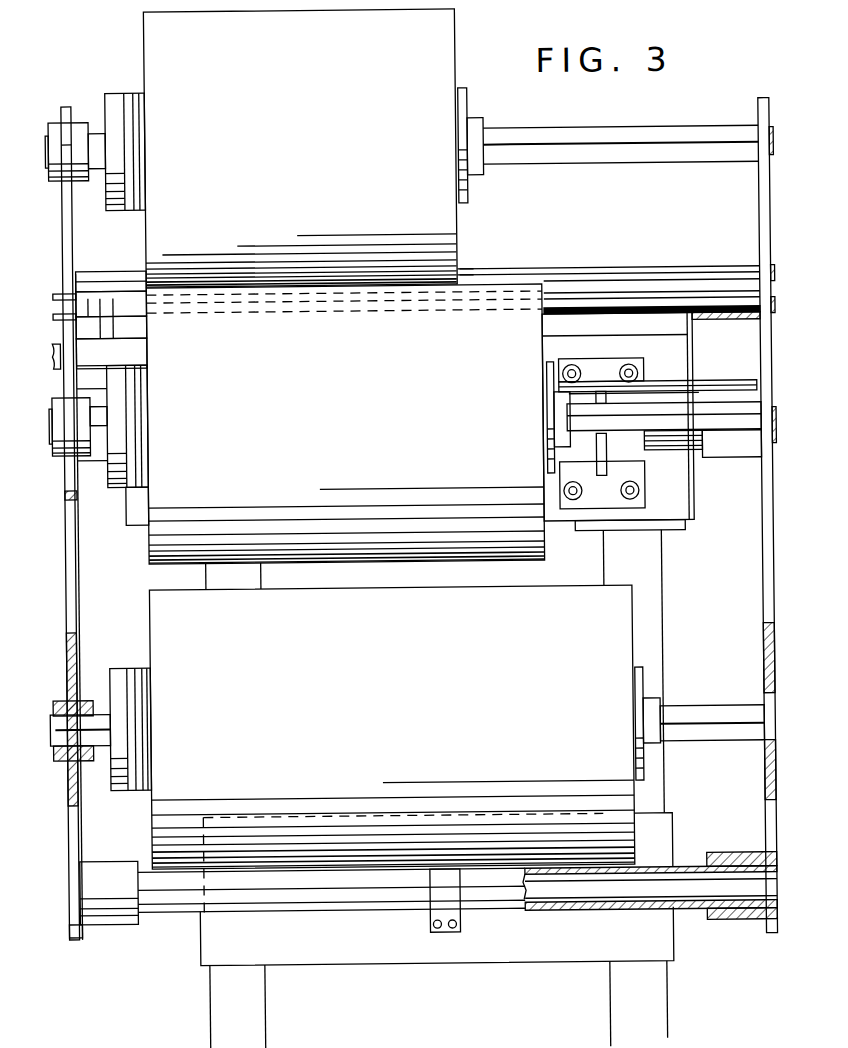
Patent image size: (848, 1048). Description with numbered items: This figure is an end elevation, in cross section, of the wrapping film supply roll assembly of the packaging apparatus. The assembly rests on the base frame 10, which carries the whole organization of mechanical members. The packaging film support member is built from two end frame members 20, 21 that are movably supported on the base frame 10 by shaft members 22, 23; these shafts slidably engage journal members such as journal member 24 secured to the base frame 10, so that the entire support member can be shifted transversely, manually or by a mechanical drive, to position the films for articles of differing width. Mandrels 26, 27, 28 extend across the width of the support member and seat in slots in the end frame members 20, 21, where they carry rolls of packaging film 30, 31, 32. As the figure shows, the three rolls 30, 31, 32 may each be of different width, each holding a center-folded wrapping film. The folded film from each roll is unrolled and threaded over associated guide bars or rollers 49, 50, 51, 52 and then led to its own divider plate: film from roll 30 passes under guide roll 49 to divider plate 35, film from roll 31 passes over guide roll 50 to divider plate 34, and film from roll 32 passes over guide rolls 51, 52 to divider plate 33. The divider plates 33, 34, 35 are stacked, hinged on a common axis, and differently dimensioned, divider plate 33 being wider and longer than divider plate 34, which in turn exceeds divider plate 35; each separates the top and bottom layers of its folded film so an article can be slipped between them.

The base frame 10 is at (662, 950).
The end frame member 20 is at (67, 519).
The end frame member 21 is at (767, 531).
The shaft member 22 is at (178, 900).
The shaft member 23 is at (685, 461).
The journal member 24 is at (448, 898).
The mandrel 26 is at (663, 126).
The mandrel 27 is at (741, 423).
The mandrel 28 is at (696, 716).
The roll of packaging film 30 is at (286, 90).
The roll of packaging film 31 is at (350, 367).
The roll of packaging film 32 is at (377, 665).
The divider plate 33 is at (565, 309).
The divider plate 34 is at (492, 294).
The divider plate 35 is at (461, 273).
The guide roll 49 is at (710, 272).
The guide roll 50 is at (752, 291).
The guide roll 51 is at (722, 321).
The guide roll 52 is at (716, 392).